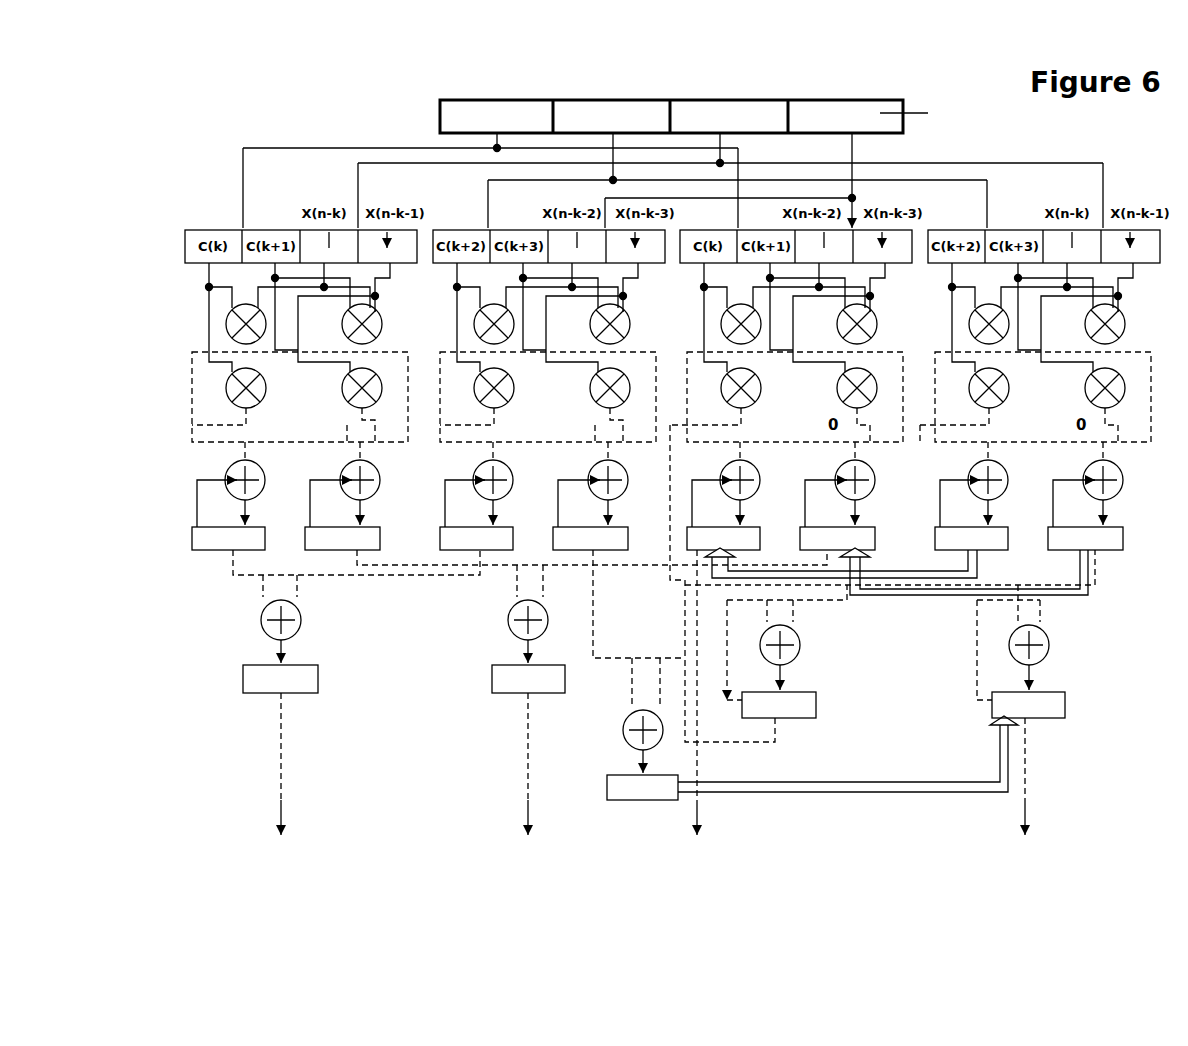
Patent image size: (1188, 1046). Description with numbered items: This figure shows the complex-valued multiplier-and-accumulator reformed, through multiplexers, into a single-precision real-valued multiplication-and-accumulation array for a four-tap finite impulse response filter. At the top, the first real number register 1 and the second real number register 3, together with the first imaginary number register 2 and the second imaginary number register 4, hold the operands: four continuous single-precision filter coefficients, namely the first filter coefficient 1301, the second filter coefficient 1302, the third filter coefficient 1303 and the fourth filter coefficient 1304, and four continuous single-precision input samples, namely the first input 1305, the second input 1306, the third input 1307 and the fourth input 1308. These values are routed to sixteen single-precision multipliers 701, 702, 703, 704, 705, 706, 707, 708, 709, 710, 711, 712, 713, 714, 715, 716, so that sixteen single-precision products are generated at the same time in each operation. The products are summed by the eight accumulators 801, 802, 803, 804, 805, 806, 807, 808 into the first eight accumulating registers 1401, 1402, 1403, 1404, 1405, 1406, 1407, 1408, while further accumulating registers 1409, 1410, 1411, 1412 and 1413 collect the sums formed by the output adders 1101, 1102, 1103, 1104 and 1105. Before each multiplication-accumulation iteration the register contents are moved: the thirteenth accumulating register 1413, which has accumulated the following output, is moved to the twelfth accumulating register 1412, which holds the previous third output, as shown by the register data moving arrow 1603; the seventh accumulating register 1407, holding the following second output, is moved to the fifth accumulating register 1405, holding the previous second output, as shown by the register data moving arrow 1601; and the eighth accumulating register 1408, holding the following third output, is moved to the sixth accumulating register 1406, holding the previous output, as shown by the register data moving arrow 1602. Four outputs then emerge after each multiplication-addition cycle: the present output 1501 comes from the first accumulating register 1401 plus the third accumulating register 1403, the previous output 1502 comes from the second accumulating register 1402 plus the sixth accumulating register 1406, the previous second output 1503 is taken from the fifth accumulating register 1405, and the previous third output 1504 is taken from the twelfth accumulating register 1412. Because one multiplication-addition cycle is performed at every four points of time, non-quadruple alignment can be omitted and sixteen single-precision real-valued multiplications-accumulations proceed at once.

The AR real number register 1 is at (463, 114).
The AI imaginary number register 2 is at (598, 114).
The BR real number register 3 is at (757, 118).
The BI imaginary number register 4 is at (887, 116).
The C(k) filter coefficient 1301 is at (462, 50).
The C(k+1) filter coefficient 1302 is at (520, 71).
The C(k+2) filter coefficient 1303 is at (598, 58).
The C(k+3) filter coefficient 1304 is at (647, 77).
The X(n-k) input 1305 is at (713, 58).
The X(n-k-1) input 1306 is at (760, 75).
The X(n-k-2) input 1307 is at (822, 57).
The X(n-k-3) input 1308 is at (870, 78).
The A0 single-precision multiplier 701 is at (210, 312).
The A1 single-precision multiplier 702 is at (375, 297).
The A2 single-precision multiplier 703 is at (222, 380).
The A3 single-precision multiplier 704 is at (345, 398).
The A4 single-precision multiplier 705 is at (458, 312).
The A5 single-precision multiplier 706 is at (623, 297).
The A6 single-precision multiplier 707 is at (470, 380).
The A7 single-precision multiplier 708 is at (593, 400).
The A8 single-precision multiplier 709 is at (705, 312).
The A9 single-precision multiplier 710 is at (870, 297).
The A10 single-precision multiplier 711 is at (715, 380).
The A11 single-precision multiplier 712 is at (840, 398).
The A12 single-precision multiplier 713 is at (953, 312).
The A13 single-precision multiplier 714 is at (1118, 297).
The A14 single-precision multiplier 715 is at (960, 380).
The A15 single-precision multiplier 716 is at (1088, 398).
The B0 accumulator 801 is at (207, 468).
The B1 accumulator 802 is at (380, 515).
The B2 accumulator 803 is at (452, 493).
The B3 accumulator 804 is at (628, 515).
The B4 accumulator 805 is at (698, 465).
The B5 accumulator 806 is at (878, 510).
The B6 accumulator 807 is at (947, 468).
The B7 accumulator 808 is at (1128, 515).
The S0 output adder 1101 is at (238, 625).
The S1 output adder 1102 is at (485, 625).
The S2 output adder 1103 is at (828, 650).
The S3 output adder 1104 is at (988, 640).
The S4 output adder 1105 is at (620, 737).
The acc0 accumulating register 1401 is at (207, 542).
The acc1 accumulating register 1402 is at (325, 540).
The acc2 accumulating register 1403 is at (455, 540).
The acc3 accumulating register 1404 is at (588, 542).
The acc4 accumulating register 1405 is at (700, 543).
The acc5 accumulating register 1406 is at (821, 550).
The acc6 accumulating register 1407 is at (993, 542).
The acc7 accumulating register 1408 is at (1100, 538).
The acc8 accumulating register 1409 is at (258, 680).
The acc9 accumulating register 1410 is at (502, 682).
The acc10 accumulating register 1411 is at (797, 712).
The acc11 accumulating register 1412 is at (1050, 712).
The acc12 accumulating register 1413 is at (620, 800).
The Y(n) output 1501 is at (230, 812).
The Y(n-1) output 1502 is at (455, 812).
The Y(n-2) output 1503 is at (765, 820).
The Y(n-3) output 1504 is at (957, 815).
The register data moving arrow 1601 is at (873, 579).
The register data moving arrow 1602 is at (945, 596).
The register data moving arrow 1603 is at (950, 783).